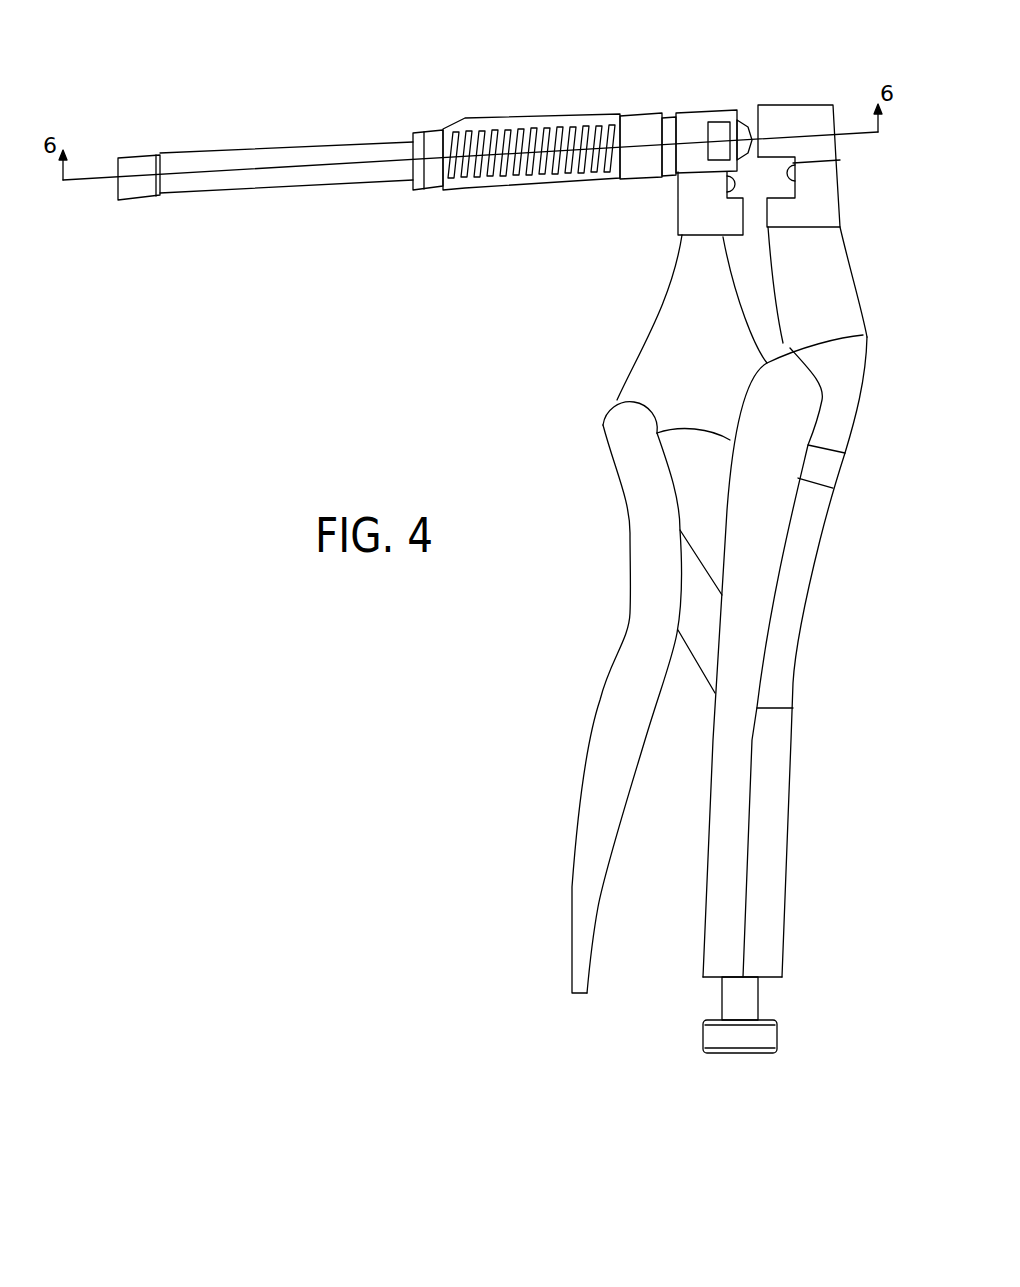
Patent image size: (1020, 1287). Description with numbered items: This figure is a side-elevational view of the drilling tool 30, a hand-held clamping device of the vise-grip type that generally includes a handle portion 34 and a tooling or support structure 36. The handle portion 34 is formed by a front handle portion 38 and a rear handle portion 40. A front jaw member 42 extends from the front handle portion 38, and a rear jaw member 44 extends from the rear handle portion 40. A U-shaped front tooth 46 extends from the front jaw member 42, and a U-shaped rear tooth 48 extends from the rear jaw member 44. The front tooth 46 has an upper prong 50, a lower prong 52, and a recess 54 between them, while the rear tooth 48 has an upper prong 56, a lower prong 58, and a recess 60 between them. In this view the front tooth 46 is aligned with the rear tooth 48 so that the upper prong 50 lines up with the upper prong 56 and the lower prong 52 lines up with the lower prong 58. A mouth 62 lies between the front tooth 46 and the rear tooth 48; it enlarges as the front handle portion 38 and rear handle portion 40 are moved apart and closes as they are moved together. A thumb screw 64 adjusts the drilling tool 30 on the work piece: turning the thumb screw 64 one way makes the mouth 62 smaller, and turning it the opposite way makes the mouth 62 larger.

The drilling tool 30 is at (452, 716).
The handle portion 34 is at (806, 880).
The tooling or support structure 36 is at (364, 236).
The front handle portion 38 is at (775, 813).
The rear handle portion 40 is at (592, 793).
The front jaw member 42 is at (845, 293).
The rear jaw member 44 is at (688, 287).
The front tooth 46 is at (823, 187).
The rear tooth 48 is at (688, 197).
The upper prong 50 is at (793, 115).
The lower prong 52 is at (783, 221).
The recess 54 is at (840, 160).
The upper prong 56 is at (722, 118).
The lower prong 58 is at (727, 223).
The recess 60 is at (727, 197).
The mouth 62 is at (751, 106).
The thumb screw 64 is at (742, 1037).